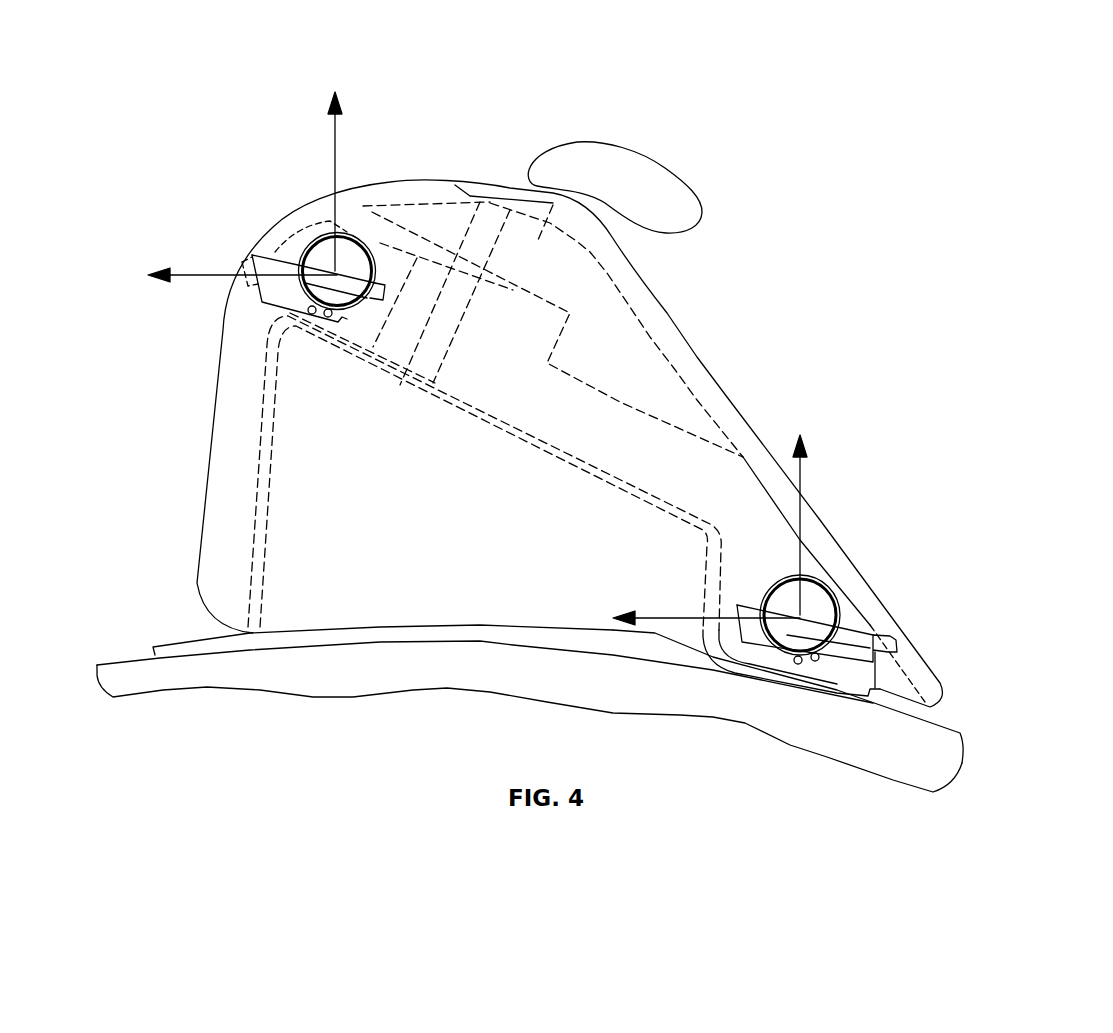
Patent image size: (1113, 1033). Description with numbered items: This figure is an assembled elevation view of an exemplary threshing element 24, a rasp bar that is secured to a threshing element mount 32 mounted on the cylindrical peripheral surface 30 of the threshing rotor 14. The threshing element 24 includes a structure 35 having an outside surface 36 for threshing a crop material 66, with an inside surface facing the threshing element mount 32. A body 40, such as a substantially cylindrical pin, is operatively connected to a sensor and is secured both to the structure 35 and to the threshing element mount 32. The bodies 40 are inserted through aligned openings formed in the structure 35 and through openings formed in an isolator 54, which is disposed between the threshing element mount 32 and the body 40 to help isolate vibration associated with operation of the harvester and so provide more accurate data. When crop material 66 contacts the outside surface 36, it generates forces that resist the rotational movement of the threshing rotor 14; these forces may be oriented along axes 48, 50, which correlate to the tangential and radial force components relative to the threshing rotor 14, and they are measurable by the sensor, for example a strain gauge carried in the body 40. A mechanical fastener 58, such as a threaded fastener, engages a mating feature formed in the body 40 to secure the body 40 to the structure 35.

The threshing rotor 14 is at (963, 760).
The threshing element 24 is at (278, 223).
The cylindrical peripheral surface 30 is at (950, 730).
The threshing element mount 32 is at (188, 638).
The structure 35 is at (427, 178).
The outside surface 36 is at (670, 310).
The body 40 is at (347, 253).
The axis 48 is at (210, 277).
The axis 50 is at (332, 178).
The isolator 54 is at (620, 402).
The mechanical fastener 58 is at (258, 247).
The crop material 66 is at (655, 153).